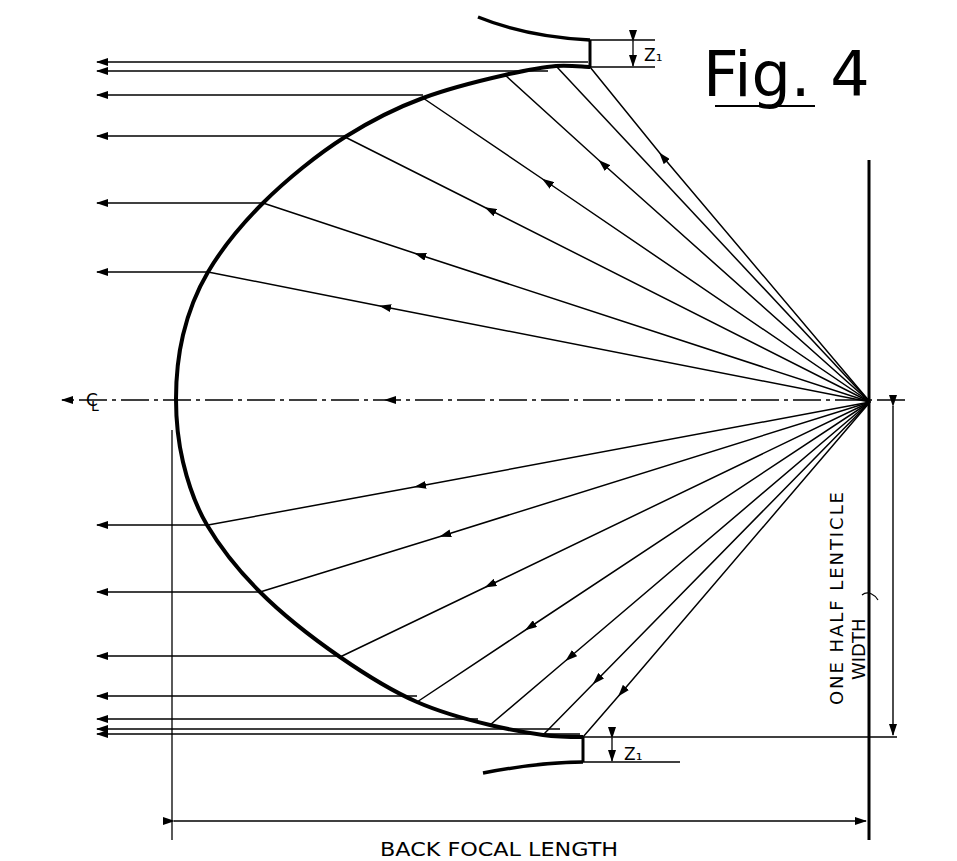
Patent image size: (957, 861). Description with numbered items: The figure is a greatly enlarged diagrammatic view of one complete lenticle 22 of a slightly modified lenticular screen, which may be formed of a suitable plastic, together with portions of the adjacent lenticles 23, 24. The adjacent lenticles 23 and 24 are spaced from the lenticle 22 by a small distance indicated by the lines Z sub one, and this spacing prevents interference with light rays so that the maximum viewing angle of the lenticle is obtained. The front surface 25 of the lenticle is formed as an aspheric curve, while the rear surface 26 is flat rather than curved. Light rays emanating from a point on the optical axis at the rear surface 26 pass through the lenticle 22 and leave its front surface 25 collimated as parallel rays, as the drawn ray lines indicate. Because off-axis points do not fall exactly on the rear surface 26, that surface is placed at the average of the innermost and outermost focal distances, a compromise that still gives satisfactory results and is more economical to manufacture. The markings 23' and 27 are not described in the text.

The lenticle 22 is at (790, 203).
The adjacent lenticle 23 is at (539, 34).
The upper lenticle surface portion 23' is at (167, 11).
The adjacent lenticle 24 is at (545, 806).
The front surface 25 is at (433, 706).
The rear surface 26 is at (872, 300).
The lenticle boundary line 27 is at (718, 741).